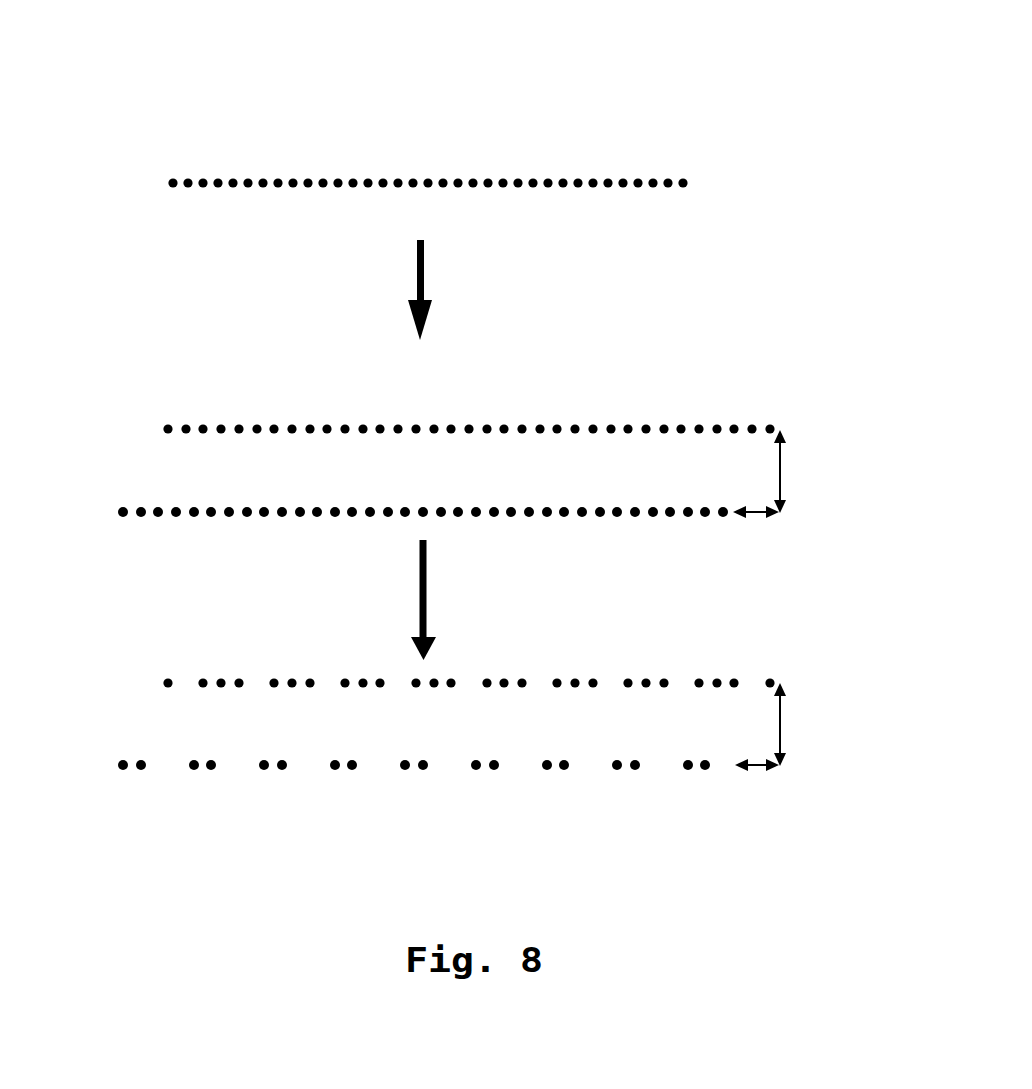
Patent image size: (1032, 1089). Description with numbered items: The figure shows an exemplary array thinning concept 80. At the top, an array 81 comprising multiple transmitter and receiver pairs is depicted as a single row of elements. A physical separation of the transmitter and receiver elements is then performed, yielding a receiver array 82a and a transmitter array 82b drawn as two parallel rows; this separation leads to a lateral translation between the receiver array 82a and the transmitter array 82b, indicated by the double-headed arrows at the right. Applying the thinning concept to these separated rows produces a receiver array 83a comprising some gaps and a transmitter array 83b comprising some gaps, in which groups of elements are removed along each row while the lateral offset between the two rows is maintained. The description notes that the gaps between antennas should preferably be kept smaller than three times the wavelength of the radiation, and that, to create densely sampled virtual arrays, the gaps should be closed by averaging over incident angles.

The array thinning concept diagram 80 is at (205, 52).
The array 81 is at (131, 183).
The receiver array 82a is at (131, 430).
The transmitter array 82b is at (84, 512).
The receiver array comprising some gaps 83a is at (120, 683).
The transmitter array comprising some gaps 83b is at (84, 765).